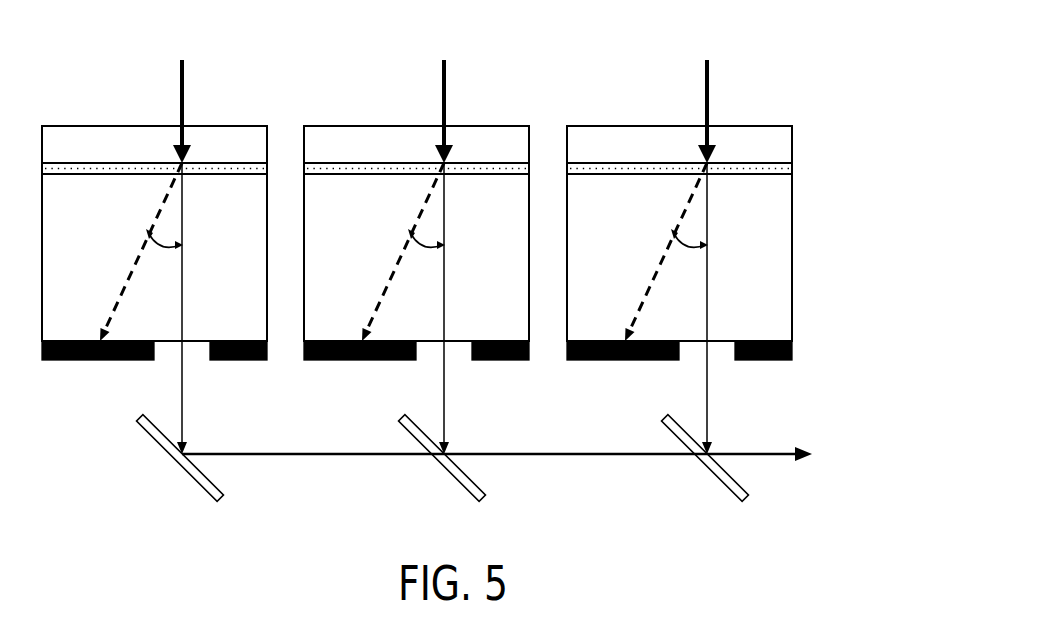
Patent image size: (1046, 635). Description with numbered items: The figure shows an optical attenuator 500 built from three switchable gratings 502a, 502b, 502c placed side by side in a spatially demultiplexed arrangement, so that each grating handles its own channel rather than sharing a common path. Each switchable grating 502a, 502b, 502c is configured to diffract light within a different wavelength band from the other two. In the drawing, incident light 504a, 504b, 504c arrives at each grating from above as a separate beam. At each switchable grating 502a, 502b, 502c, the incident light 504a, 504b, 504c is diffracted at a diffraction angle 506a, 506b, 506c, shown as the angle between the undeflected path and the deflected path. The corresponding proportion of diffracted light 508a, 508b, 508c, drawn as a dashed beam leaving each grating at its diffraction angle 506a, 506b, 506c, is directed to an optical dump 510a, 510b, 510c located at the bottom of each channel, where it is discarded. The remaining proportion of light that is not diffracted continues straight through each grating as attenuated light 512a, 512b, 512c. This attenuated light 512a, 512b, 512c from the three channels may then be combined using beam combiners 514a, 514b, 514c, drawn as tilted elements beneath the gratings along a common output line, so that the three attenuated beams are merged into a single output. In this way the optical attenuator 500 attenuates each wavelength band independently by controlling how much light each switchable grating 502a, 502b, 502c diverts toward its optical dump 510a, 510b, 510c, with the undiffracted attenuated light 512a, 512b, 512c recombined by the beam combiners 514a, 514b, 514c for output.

The optical attenuator 500 is at (856, 0).
The switchable grating 502a is at (119, 163).
The switchable grating 502b is at (416, 154).
The switchable grating 502c is at (679, 154).
The incident light 504a is at (179, 90).
The incident light 504b is at (403, 111).
The incident light 504c is at (666, 111).
The diffraction angle 506a is at (150, 234).
The diffraction angle 506b is at (400, 214).
The diffraction angle 506c is at (663, 214).
The diffracted light 508a is at (127, 283).
The diffracted light 508b is at (382, 252).
The diffracted light 508c is at (645, 252).
The optical dump 510a is at (90, 361).
The optical dump 510b is at (416, 380).
The optical dump 510c is at (679, 380).
The attenuated light 512a is at (182, 382).
The attenuated light 512b is at (480, 308).
The attenuated light 512c is at (743, 308).
The beam combiner 514a is at (184, 474).
The beam combiner 514b is at (429, 463).
The beam combiner 514c is at (692, 463).